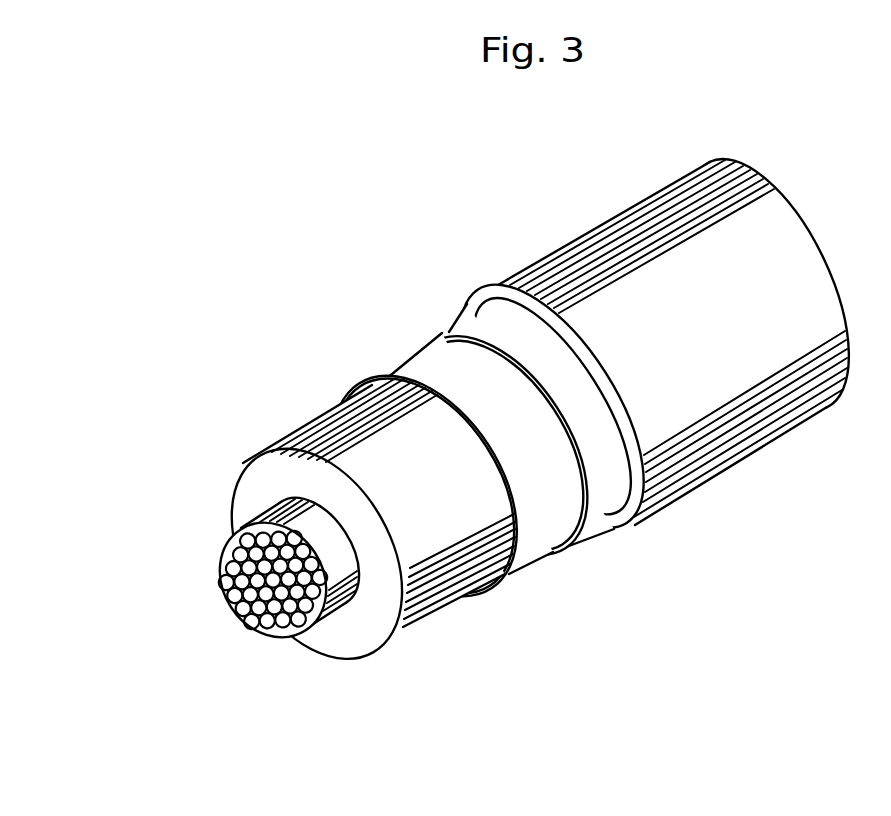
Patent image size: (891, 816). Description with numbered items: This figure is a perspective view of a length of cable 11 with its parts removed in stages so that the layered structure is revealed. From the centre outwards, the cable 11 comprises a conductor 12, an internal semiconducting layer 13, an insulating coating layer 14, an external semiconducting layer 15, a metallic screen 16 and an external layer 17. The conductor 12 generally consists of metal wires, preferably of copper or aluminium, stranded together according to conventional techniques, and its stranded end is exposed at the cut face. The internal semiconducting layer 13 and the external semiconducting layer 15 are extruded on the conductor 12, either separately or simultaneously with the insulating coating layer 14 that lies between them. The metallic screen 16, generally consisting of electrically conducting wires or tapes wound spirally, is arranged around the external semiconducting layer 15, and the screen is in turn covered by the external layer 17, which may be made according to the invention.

The cable 11 is at (522, 252).
The conductor 12 is at (222, 552).
The internal semiconducting layer 13 is at (340, 608).
The insulating coating layer 14 is at (316, 420).
The external semiconducting layer 15 is at (420, 352).
The metallic screen 16 is at (610, 533).
The external layer 17 is at (740, 450).